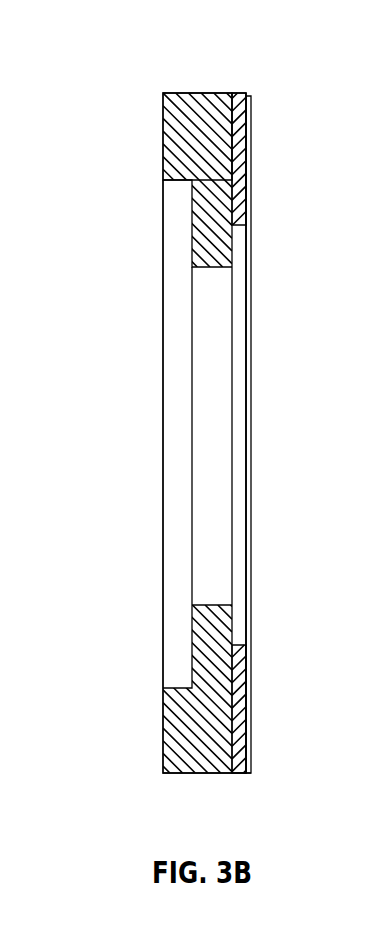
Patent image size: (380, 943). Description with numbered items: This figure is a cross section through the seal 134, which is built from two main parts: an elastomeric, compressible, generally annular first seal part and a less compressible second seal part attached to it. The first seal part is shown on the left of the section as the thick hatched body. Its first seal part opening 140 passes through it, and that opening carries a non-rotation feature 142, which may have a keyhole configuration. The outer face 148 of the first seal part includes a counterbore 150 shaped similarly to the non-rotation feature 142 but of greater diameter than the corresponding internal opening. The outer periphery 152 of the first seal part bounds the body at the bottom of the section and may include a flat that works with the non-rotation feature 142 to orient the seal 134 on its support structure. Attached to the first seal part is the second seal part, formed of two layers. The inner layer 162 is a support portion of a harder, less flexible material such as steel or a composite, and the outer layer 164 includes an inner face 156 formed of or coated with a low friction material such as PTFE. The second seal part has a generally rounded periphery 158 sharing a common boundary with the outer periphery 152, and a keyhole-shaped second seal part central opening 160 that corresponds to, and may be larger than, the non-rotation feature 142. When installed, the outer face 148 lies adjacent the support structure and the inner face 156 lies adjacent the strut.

The seal 134 is at (270, 79).
The first seal part opening 140 is at (201, 437).
The non-rotation feature 142 is at (211, 592).
The outer face 148 is at (163, 159).
The counterbore 150 is at (191, 247).
The outer periphery 152 is at (204, 774).
The inner face 156 is at (254, 687).
The rounded periphery 158 is at (238, 774).
The second seal part central opening 160 is at (236, 644).
The inner layer 162 is at (240, 158).
The outer layer 164 is at (250, 210).